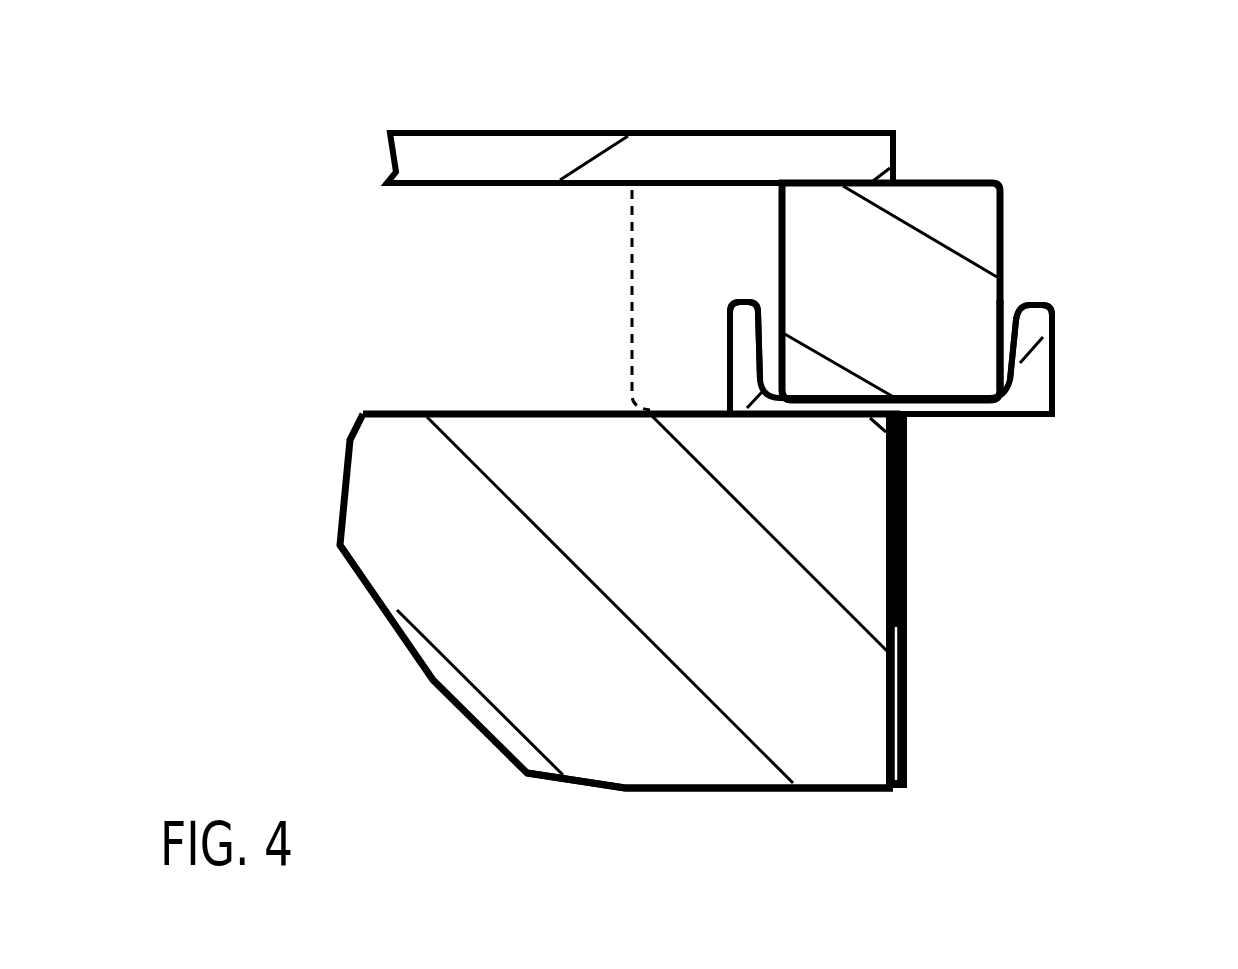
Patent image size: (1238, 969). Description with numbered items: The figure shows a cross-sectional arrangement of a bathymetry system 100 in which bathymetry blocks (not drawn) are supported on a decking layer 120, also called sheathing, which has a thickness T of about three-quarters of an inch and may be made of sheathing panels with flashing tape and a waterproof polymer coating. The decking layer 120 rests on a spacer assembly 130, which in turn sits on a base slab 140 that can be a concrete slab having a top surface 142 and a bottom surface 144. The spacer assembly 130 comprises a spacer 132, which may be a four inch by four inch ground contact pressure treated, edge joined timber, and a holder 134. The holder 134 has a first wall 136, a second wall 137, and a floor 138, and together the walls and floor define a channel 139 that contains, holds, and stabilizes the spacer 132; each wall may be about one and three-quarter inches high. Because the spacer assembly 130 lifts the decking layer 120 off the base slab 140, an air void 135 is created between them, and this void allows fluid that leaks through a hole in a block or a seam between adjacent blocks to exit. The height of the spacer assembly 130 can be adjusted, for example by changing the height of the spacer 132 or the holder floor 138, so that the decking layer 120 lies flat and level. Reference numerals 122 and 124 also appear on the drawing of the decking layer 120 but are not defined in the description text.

The bathymetry system 100 is at (198, 180).
The decking layer 120 is at (603, 115).
The cover plate 122 is at (418, 128).
The cover plate lower surface 124 is at (500, 190).
The thickness T is at (897, 152).
The spacer assembly 130 is at (1062, 140).
The spacer 132 is at (1010, 195).
The holder 134 is at (1002, 435).
The air void 135 is at (624, 295).
The first wall 136 is at (723, 328).
The second wall 137 is at (1058, 357).
The floor 138 is at (932, 420).
The channel 139 is at (1012, 315).
The base slab 140 is at (345, 625).
The top surface 142 is at (470, 400).
The bottom surface 144 is at (747, 795).